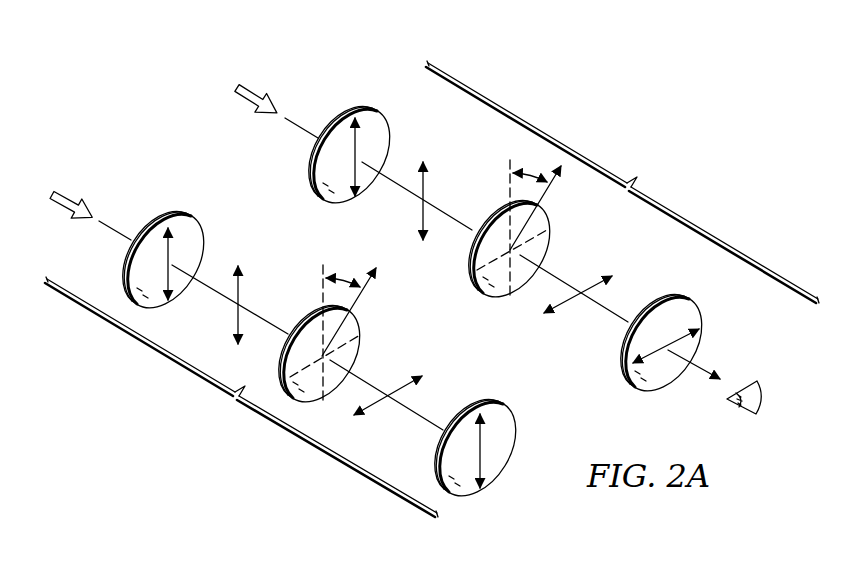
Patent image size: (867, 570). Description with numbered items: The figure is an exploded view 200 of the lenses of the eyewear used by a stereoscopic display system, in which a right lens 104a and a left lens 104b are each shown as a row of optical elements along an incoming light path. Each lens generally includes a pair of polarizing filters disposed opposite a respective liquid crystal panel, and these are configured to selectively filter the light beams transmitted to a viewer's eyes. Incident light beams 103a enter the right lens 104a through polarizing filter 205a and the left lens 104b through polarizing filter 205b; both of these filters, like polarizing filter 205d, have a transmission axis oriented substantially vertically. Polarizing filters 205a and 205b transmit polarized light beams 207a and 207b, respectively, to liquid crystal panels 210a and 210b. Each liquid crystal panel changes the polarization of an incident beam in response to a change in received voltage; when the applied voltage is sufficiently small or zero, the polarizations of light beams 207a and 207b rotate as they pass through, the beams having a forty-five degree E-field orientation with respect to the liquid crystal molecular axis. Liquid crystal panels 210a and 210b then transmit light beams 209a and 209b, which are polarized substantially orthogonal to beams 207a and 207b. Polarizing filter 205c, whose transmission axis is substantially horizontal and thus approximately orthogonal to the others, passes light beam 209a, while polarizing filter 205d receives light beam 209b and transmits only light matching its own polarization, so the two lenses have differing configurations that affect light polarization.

The exploded view 200 is at (168, 70).
The light beam 103a is at (258, 88).
The right lens 104a is at (622, 182).
The left lens 104b is at (241, 397).
The polarizing filter 205a is at (347, 114).
The polarizing filter 205b is at (161, 218).
The polarizing filter 205c is at (664, 297).
The polarizing filter 205d is at (472, 406).
The light beam 207a is at (420, 212).
The light beam 207b is at (234, 318).
The light beam 209a is at (568, 303).
The light beam 209b is at (376, 405).
The liquid crystal panel 210a is at (491, 219).
The liquid crystal panel 210b is at (306, 322).